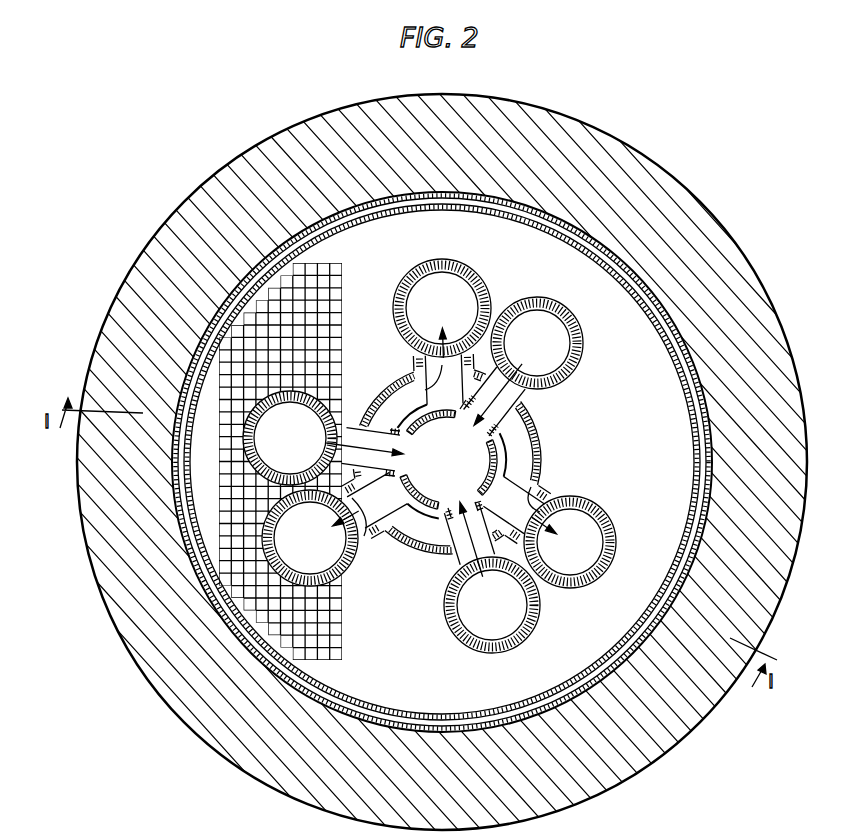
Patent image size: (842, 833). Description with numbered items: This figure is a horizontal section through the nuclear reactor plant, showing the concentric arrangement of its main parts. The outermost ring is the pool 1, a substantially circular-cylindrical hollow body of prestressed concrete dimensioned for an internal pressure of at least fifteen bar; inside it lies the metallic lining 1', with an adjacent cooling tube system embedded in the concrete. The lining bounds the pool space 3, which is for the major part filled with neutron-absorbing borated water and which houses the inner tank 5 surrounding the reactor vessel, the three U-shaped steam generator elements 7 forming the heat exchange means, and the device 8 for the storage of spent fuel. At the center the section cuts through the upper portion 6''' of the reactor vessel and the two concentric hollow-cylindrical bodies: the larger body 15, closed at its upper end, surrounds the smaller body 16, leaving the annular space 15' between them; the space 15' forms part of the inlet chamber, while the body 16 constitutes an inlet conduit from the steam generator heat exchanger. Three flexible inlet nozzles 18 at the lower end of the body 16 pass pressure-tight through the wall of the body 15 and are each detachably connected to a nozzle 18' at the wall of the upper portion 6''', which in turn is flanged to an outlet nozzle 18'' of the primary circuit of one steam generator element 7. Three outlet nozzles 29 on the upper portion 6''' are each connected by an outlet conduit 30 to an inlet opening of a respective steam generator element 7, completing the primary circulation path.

The pool 1 is at (421, 416).
The metallic lining 1' is at (472, 462).
The pool space 3 is at (668, 318).
The inner tank 5 is at (605, 313).
The steam generator elements 7 is at (522, 300).
The device for the storage of spent fuel 8 is at (310, 633).
The hollow-cylindrical body 15 is at (452, 499).
The annular space 15' is at (445, 485).
The hollow-cylindrical body 16 is at (412, 500).
The inlet nozzles 18 is at (456, 452).
The nozzle 18' is at (488, 458).
The outlet nozzle 18'' is at (467, 504).
The outlet nozzles 29 is at (362, 530).
The outlet conduit 30 is at (415, 357).
The upper portion 6''' is at (468, 454).